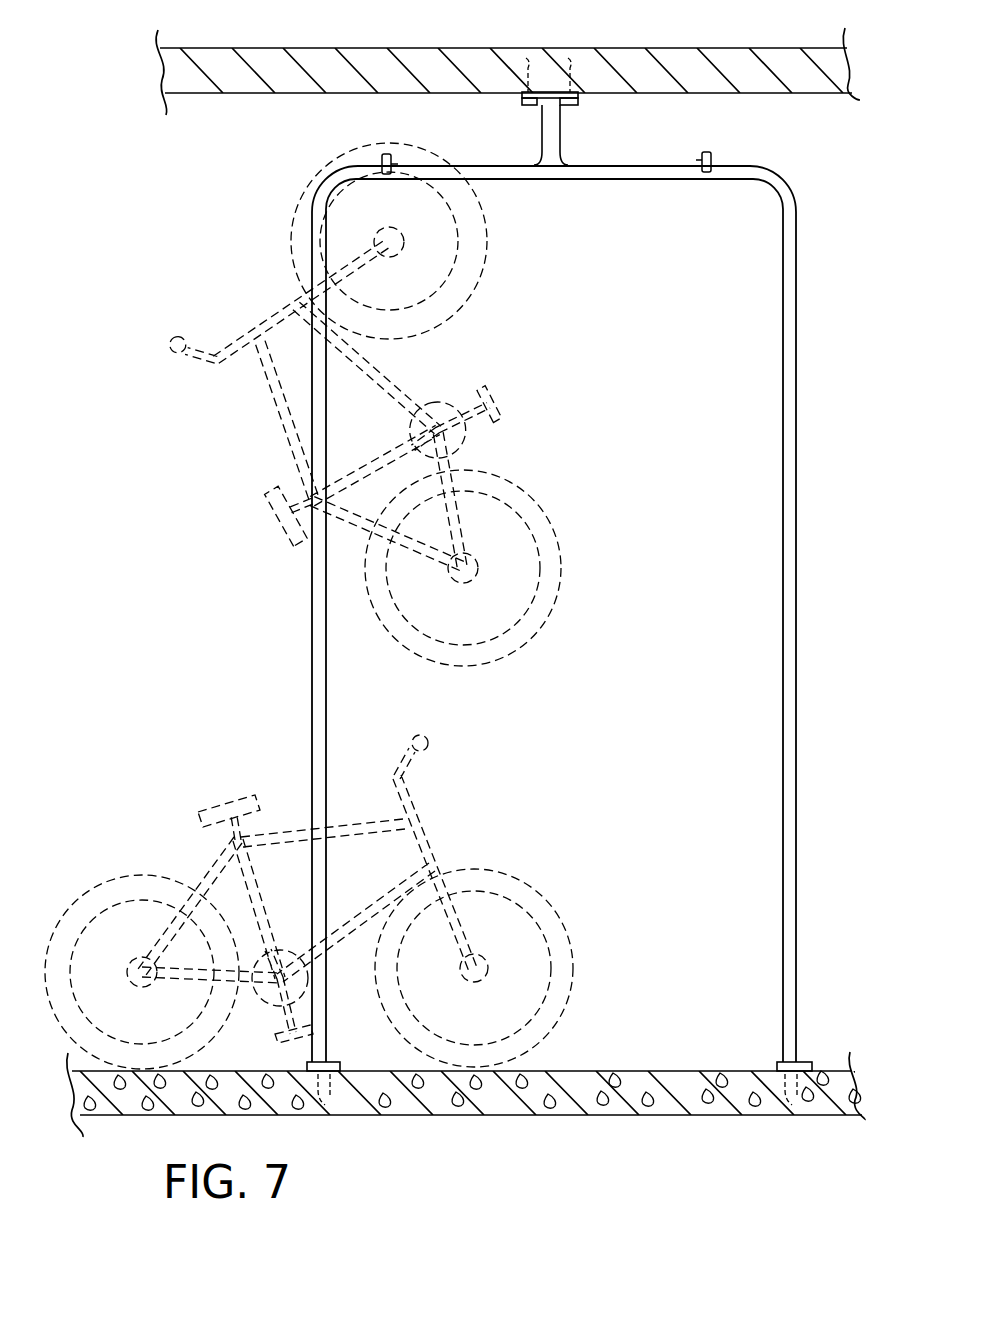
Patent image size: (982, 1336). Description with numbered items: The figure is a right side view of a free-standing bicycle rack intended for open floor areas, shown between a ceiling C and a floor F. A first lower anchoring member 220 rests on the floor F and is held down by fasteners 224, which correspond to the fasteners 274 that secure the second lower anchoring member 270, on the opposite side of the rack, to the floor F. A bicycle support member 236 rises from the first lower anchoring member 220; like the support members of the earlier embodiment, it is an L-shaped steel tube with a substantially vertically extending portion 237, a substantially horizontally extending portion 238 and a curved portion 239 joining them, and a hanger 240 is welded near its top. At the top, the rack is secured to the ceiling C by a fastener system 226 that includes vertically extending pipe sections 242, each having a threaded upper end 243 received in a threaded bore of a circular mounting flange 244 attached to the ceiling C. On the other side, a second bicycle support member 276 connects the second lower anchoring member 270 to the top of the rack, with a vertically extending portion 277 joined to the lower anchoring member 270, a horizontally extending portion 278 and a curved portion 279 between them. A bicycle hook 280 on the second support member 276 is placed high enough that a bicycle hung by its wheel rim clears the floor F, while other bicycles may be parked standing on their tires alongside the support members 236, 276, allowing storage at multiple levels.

The first lower anchoring member 220 is at (338, 1063).
The first floor anchor bolt 224 is at (345, 1100).
The fastener system 226 is at (551, 82).
The bicycle support member 236 is at (269, 635).
The vertically extending portion 237 is at (312, 700).
The horizontally extending portion 238 is at (554, 181).
The curved portion 239 is at (337, 190).
The hanger 240 is at (383, 158).
The pipe section 242 is at (553, 136).
The threaded upper end 243 is at (527, 100).
The circular mounting flange 244 is at (592, 94).
The second lower anchoring member 270 is at (781, 1062).
The fasteners 274 is at (792, 1078).
The second bicycle support member 276 is at (834, 635).
The vertically extending portion 277 is at (798, 638).
The horizontally extending portion 278 is at (652, 179).
The curved portion 279 is at (787, 188).
The bicycle hook 280 is at (711, 158).
The ceiling C is at (246, 95).
The floor F is at (664, 1069).